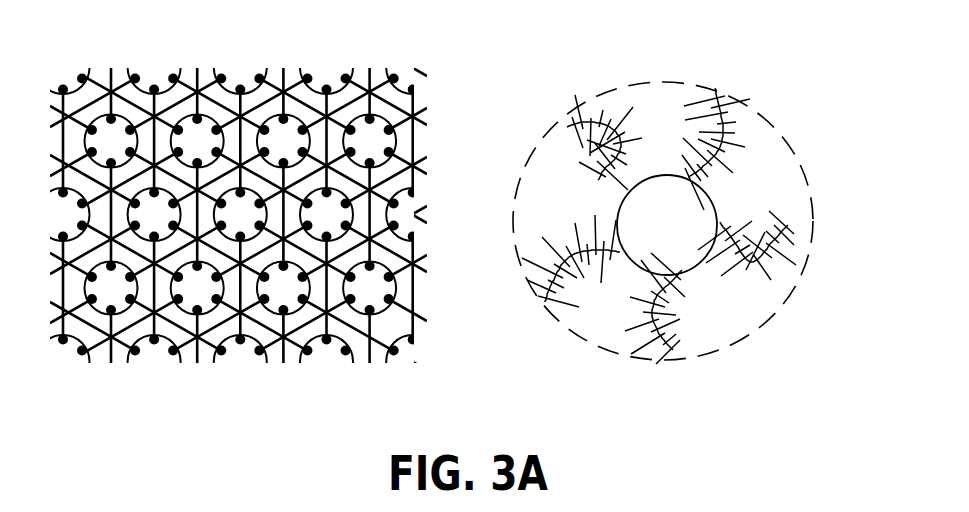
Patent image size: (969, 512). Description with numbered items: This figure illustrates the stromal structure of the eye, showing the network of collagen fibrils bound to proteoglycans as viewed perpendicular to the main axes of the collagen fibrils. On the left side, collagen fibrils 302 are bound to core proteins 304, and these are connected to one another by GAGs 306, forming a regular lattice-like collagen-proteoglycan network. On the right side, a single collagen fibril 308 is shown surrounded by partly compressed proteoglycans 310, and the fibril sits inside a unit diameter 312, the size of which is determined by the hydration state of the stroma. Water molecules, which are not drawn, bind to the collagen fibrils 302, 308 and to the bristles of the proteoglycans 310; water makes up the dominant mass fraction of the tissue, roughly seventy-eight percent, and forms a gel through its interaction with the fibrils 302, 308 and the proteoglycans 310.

The collagen fibrils 302 is at (155, 358).
The core proteins 304 is at (172, 358).
The GAGs 306 is at (281, 365).
The single collagen fibril 308 is at (713, 250).
The partly compressed proteoglycans 310 is at (787, 253).
The unit diameter 312 is at (670, 80).